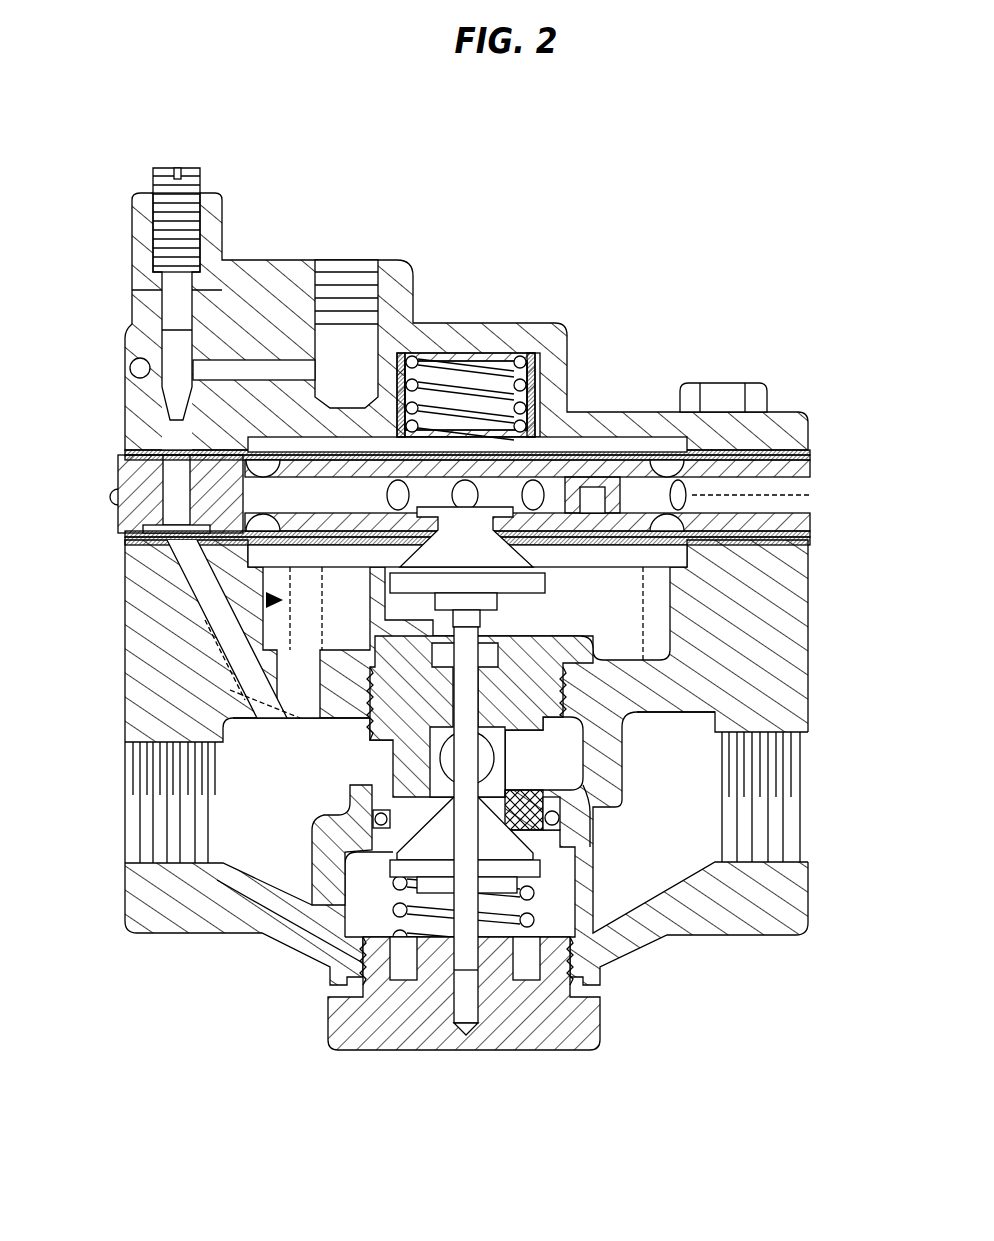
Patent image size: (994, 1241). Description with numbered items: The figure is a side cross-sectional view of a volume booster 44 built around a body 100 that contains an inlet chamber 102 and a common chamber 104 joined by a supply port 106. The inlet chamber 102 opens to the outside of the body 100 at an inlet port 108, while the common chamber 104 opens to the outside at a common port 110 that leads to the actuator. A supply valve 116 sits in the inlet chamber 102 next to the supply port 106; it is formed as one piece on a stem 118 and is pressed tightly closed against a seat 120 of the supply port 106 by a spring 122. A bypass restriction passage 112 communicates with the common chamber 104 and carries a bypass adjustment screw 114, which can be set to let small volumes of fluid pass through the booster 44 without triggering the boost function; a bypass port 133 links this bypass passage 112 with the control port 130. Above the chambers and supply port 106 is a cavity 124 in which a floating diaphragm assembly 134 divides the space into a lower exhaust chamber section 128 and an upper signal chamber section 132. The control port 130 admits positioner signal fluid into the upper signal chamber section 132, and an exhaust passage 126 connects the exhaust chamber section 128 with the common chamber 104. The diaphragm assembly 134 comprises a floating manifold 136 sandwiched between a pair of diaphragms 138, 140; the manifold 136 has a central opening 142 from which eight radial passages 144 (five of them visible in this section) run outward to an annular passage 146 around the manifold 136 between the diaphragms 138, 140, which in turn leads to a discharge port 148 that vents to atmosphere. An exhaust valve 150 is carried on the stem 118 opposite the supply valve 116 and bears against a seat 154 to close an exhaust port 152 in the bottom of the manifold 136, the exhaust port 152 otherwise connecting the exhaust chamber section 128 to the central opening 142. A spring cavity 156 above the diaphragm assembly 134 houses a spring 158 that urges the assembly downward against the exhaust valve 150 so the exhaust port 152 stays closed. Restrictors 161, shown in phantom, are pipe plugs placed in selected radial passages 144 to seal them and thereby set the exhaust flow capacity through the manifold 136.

The volume booster 44 is at (756, 294).
The body 100 is at (785, 684).
The inlet chamber 102 is at (645, 795).
The common chamber 104 is at (243, 808).
The supply port 106 is at (575, 835).
The inlet port 108 is at (807, 840).
The common port 110 is at (124, 846).
The bypass restriction passage 112 is at (237, 693).
The bypass adjustment screw 114 is at (155, 170).
The supply valve 116 is at (312, 950).
The stem 118 is at (392, 785).
The seat 120 is at (538, 856).
The spring 122 is at (537, 917).
The cavity 124 is at (203, 583).
The exhaust passage 126 is at (217, 650).
The exhaust chamber section 128 is at (340, 603).
The control port 130 is at (372, 262).
The upper signal chamber section 132 is at (302, 440).
The bypass port 133 is at (258, 370).
The floating diaphragm assembly 134 is at (140, 480).
The floating manifold 136 is at (620, 447).
The diaphragm 138 is at (645, 470).
The diaphragm 140 is at (655, 540).
The central opening 142 is at (473, 500).
The radial passages 144 is at (543, 415).
The annular passage 146 is at (690, 496).
The discharge port 148 is at (773, 473).
The exhaust valve 150 is at (545, 585).
The exhaust port 152 is at (440, 590).
The seat 154 is at (530, 560).
The spring cavity 156 is at (495, 355).
The spring 158 is at (445, 355).
The restrictors 161 is at (400, 360).